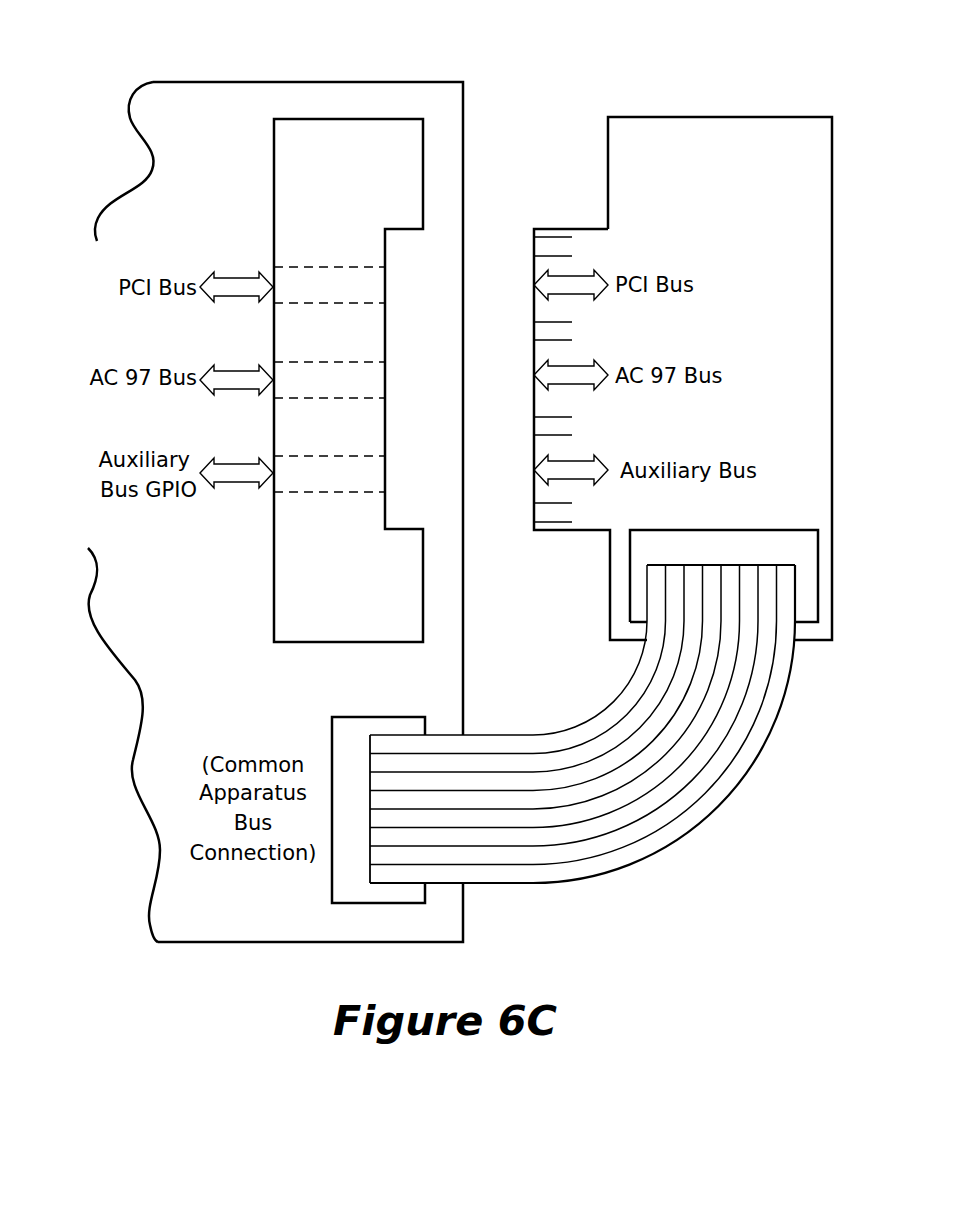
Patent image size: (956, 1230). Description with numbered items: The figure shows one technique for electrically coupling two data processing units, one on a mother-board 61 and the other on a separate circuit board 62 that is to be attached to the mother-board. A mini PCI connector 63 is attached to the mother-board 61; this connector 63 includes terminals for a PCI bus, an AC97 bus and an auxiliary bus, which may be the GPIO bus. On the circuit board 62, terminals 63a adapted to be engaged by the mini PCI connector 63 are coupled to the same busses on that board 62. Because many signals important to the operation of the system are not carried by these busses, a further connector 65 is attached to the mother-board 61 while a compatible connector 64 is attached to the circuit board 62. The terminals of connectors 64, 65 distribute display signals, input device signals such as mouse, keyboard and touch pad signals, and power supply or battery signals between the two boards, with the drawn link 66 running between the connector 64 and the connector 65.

The mother-board 61 is at (437, 82).
The circuit board 62 is at (687, 117).
The mini PCI connector 63 is at (347, 119).
The terminals 63a is at (550, 328).
The connector 64 is at (750, 528).
The connector 65 is at (377, 717).
The ribbon cable 66 is at (740, 775).